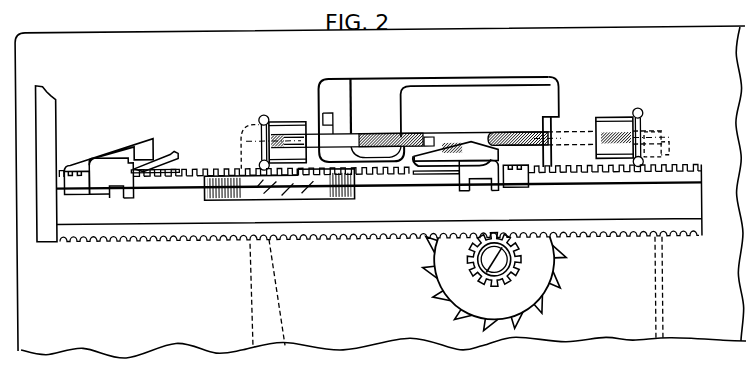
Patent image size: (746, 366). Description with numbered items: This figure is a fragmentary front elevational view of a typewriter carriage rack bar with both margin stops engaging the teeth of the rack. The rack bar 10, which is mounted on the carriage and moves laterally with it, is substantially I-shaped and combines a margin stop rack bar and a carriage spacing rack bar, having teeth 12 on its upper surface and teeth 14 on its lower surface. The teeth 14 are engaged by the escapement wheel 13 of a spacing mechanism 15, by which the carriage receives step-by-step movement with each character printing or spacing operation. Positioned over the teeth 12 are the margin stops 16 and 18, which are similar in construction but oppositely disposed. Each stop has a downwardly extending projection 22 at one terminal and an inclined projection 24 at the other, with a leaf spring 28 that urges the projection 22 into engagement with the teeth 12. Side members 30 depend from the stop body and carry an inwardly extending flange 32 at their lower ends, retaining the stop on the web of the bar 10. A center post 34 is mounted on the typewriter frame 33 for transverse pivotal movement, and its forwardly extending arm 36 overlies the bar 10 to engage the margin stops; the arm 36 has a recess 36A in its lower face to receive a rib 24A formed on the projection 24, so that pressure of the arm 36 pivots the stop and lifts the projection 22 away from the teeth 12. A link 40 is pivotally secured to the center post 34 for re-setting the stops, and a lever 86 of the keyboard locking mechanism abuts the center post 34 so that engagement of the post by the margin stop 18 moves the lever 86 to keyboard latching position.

The rack bar 10 is at (207, 216).
The teeth 12 is at (672, 169).
The escapement wheel 13 is at (468, 274).
The teeth 14 is at (143, 245).
The spacing mechanism 15 is at (505, 315).
The margin stop 16 is at (137, 148).
The margin stop 18 is at (468, 146).
The downwardly extending projection 22 is at (72, 195).
The inclined projection 24 is at (165, 154).
The rib 24A is at (443, 152).
The leaf spring 28 is at (179, 169).
The side members 30 is at (103, 188).
The inwardly extending flange 32 is at (130, 194).
The typewriter frame 33 is at (228, 94).
The center post 34 is at (287, 141).
The arm 36 is at (430, 146).
The recess 36A is at (428, 146).
The link 40 is at (652, 298).
The lever 86 is at (272, 305).